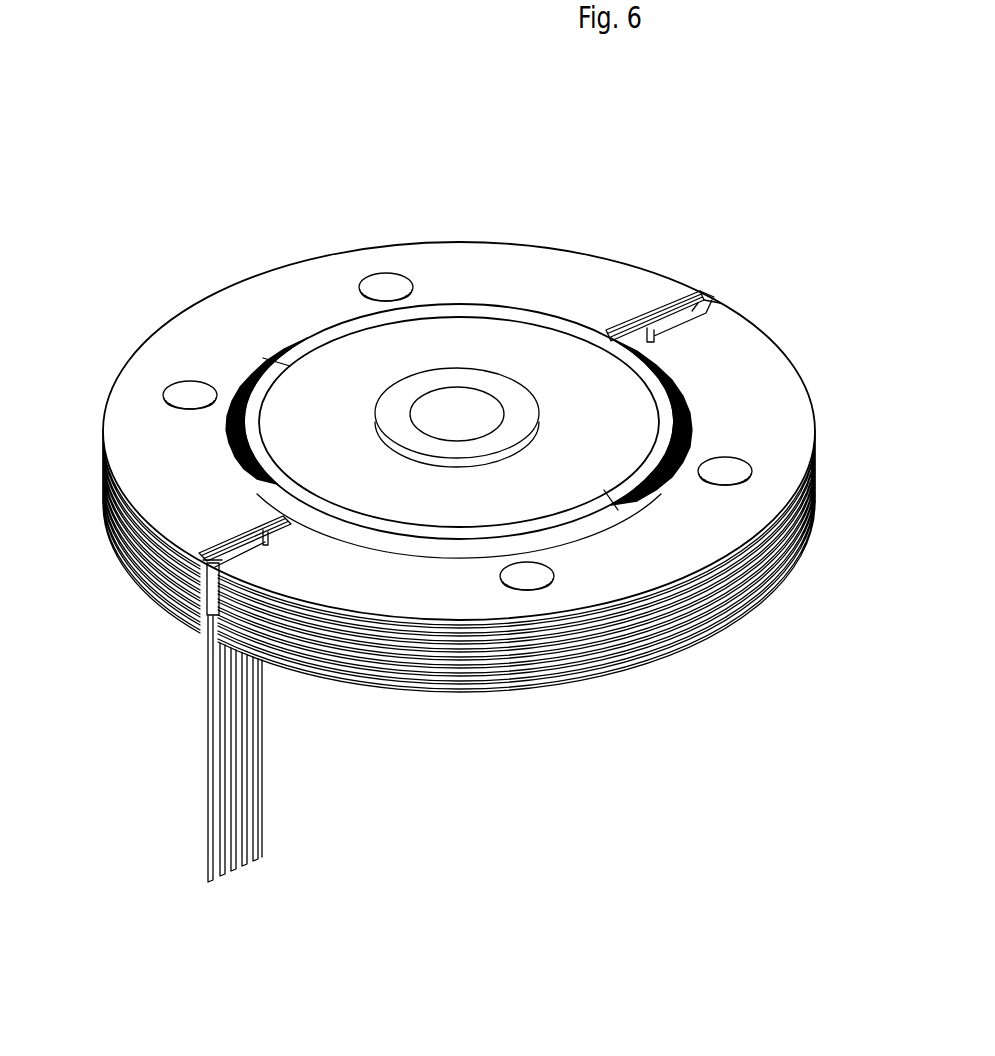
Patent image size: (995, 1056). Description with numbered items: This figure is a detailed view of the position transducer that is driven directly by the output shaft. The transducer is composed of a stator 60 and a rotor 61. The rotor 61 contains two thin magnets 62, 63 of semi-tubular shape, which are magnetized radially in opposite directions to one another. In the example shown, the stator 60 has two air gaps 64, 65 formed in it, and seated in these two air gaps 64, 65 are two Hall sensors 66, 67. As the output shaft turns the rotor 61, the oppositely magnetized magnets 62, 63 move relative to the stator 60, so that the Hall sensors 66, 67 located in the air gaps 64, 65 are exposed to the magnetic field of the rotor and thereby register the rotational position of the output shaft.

The stator 60 is at (778, 408).
The rotor 61 is at (478, 352).
The magnet 62 is at (318, 342).
The magnet 63 is at (425, 532).
The air gap 64 is at (635, 322).
The air gap 65 is at (114, 547).
The Hall sensor 66 is at (717, 290).
The Hall sensor 67 is at (201, 620).